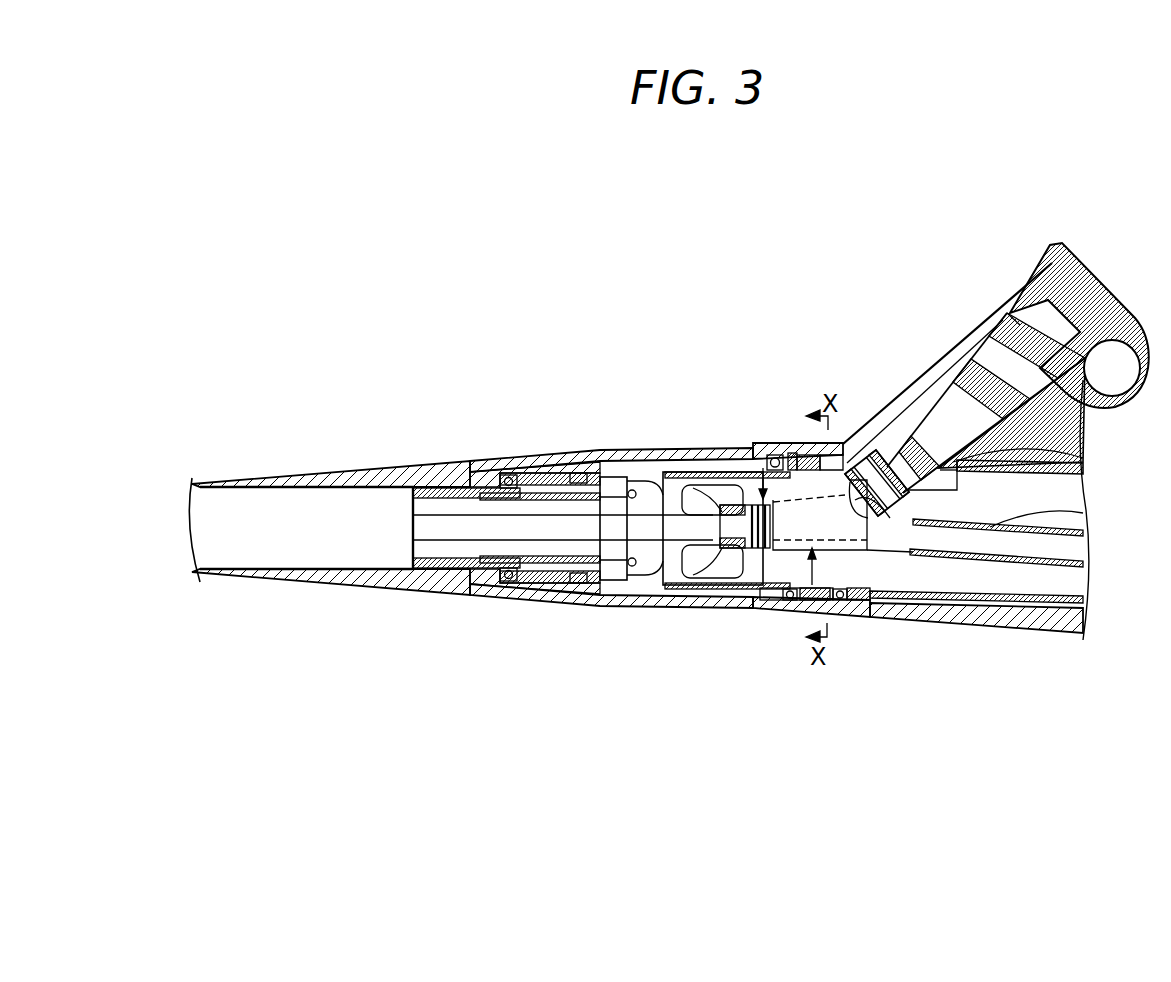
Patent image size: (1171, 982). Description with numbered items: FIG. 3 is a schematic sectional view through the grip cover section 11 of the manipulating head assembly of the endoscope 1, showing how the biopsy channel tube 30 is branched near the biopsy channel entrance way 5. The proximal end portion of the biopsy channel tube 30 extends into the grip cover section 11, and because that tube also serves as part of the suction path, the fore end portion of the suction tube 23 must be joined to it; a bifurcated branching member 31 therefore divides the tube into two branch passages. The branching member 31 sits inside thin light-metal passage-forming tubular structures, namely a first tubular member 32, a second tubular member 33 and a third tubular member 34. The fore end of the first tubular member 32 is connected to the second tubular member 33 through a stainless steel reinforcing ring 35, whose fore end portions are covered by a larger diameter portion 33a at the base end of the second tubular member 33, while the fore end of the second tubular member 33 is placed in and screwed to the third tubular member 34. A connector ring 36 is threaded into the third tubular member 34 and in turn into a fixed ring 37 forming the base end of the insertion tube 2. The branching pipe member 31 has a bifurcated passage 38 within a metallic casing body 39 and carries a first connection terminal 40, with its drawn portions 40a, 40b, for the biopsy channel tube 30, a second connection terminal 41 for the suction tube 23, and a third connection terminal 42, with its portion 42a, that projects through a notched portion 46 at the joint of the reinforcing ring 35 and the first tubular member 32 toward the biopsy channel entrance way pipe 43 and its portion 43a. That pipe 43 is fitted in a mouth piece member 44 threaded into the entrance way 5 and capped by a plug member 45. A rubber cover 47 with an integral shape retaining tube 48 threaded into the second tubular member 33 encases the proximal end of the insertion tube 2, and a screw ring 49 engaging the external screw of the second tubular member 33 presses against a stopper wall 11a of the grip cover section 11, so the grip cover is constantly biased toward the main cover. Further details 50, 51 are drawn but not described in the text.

The treatment instrument 1 is at (893, 318).
The insertion tube 2 is at (320, 472).
The biopsy channel entrance way 5 is at (978, 325).
The grip cover section 11 is at (1020, 620).
The stopper wall 11a is at (800, 447).
The suction tube 23 is at (1083, 532).
The biopsy channel tube 30 is at (448, 486).
The bifurcated branching member 31 is at (813, 612).
The first tubular member 32 is at (1073, 632).
The second tubular member 33 is at (763, 612).
The larger diameter portion 33a is at (838, 616).
The third tubular member 34 is at (533, 473).
The reinforcing ring 35 is at (862, 616).
The connector ring 36 is at (557, 566).
The fixed ring 37 is at (460, 568).
The bifurcated passage 38 is at (772, 447).
The metallic casing body 39 is at (802, 542).
The first connection terminal 40 is at (742, 447).
The collar 40a is at (680, 585).
The spring portion 40b is at (730, 590).
The second connection terminal 41 is at (936, 545).
The third connection terminal 42 is at (880, 452).
The seal arc 42a is at (889, 520).
The biopsy channel entrance way pipe 43 is at (920, 400).
The tube member end 43a is at (944, 472).
The mouth piece member 44 is at (1000, 332).
The plug member 45 is at (1056, 268).
The notched portion 46 is at (1085, 466).
The rubber cover 47 is at (292, 576).
The shape retaining tube 48 is at (588, 462).
The screw ring 49 is at (786, 452).
The disc 50 is at (703, 470).
The band 51 is at (677, 474).